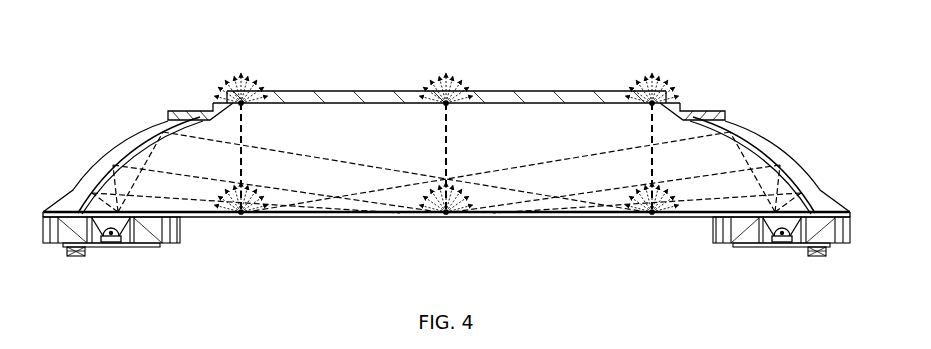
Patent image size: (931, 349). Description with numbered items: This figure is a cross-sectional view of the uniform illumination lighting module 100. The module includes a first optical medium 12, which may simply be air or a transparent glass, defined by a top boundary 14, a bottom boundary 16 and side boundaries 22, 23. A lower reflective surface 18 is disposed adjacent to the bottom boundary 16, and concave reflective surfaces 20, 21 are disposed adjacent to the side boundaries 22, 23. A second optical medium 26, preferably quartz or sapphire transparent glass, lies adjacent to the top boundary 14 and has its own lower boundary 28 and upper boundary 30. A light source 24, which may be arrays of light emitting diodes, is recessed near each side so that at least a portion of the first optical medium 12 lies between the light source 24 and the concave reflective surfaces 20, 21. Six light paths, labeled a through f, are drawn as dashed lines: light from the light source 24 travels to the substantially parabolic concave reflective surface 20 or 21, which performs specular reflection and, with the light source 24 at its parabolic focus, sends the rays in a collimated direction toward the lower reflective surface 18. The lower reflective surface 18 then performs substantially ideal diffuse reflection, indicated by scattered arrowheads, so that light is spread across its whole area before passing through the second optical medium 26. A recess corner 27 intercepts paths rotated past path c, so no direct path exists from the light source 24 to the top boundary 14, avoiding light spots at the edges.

The uniform illumination lighting module 100 is at (186, 46).
The first optical medium 12 is at (493, 140).
The top boundary 14 is at (492, 112).
The bottom boundary 16 is at (530, 218).
The lower reflective surface 18 is at (315, 218).
The concave reflective surface 20 is at (147, 143).
The concave reflective surface 21 is at (737, 135).
The side boundary 22 is at (112, 178).
The side boundary 23 is at (783, 178).
The light source 24 is at (109, 238).
The second optical medium 26 is at (362, 100).
The recess corner 27 is at (122, 208).
The lower boundary 28 is at (308, 101).
The upper boundary 30 is at (402, 98).